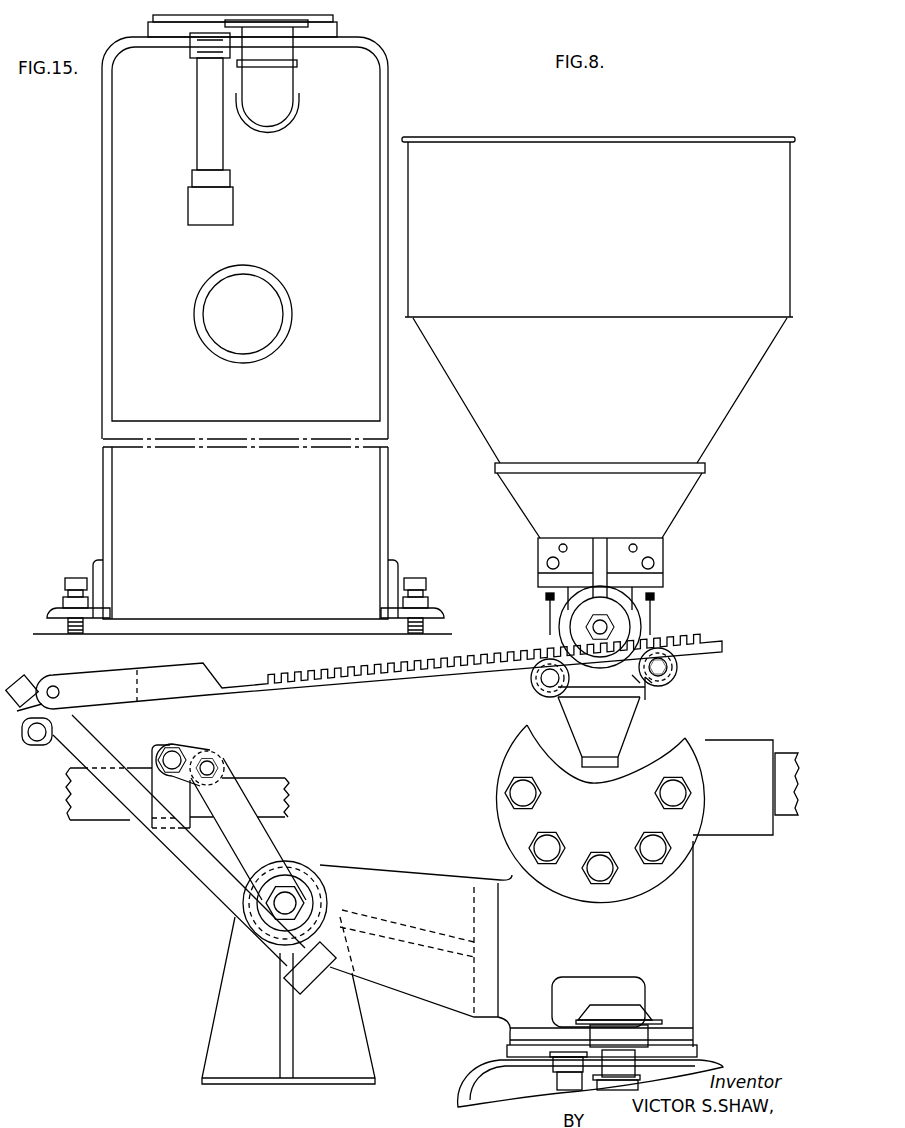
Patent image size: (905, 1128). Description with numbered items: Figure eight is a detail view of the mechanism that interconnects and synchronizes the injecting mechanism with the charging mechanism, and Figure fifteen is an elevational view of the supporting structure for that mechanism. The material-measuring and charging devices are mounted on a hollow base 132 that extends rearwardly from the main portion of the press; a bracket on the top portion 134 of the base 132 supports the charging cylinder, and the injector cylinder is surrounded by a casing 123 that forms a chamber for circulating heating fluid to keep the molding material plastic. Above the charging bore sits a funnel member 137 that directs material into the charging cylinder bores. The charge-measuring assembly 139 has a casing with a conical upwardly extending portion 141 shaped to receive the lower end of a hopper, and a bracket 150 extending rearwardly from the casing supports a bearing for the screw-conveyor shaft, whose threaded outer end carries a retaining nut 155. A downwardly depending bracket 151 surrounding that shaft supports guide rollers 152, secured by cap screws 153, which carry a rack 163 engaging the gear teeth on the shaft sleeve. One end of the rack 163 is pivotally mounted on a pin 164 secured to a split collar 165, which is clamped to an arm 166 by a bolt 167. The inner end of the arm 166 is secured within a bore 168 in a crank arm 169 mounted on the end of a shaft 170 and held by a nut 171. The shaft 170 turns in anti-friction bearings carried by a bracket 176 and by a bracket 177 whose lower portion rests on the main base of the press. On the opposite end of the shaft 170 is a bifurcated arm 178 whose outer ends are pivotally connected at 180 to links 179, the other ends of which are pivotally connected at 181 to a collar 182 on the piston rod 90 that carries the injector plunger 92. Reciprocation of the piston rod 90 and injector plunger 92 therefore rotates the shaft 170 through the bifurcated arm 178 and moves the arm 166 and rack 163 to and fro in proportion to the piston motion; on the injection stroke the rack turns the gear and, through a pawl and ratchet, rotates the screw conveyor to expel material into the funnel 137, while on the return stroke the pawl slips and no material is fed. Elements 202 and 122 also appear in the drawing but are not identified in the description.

In FIG. 15, the hollow base 132 is at (102, 182).
In FIG. 8, the hollow base 132 is at (459, 1095).
In FIG. 15, the top portion of the base 134 is at (147, 40).
In FIG. 8, the top portion of the base 134 is at (505, 1058).
In FIG. 15, the pipe / bell fitting 202 is at (288, 54).
In FIG. 8, the pipe / bell fitting 202 is at (647, 1013).
In FIG. 8, the charge-measuring assembly 139 is at (628, 478).
In FIG. 8, the conical upwardly extending portion 141 is at (527, 500).
In FIG. 8, the bracket 150 is at (664, 552).
In FIG. 8, the retaining nut 155 is at (590, 625).
In FIG. 8, the rack 163 is at (313, 672).
In FIG. 8, the pin 164 is at (56, 686).
In FIG. 8, the split collar 165 is at (42, 671).
In FIG. 8, the arm 166 is at (92, 748).
In FIG. 8, the bolt 167 is at (36, 744).
In FIG. 8, the bore 168 is at (306, 988).
In FIG. 8, the crank arm 169 is at (330, 930).
In FIG. 8, the shaft 170 is at (296, 886).
In FIG. 8, the nut 171 is at (302, 907).
In FIG. 8, the bracket 176 is at (426, 886).
In FIG. 8, the bracket 177 is at (225, 993).
In FIG. 8, the bifurcated arm 178 is at (276, 850).
In FIG. 8, the links 179 is at (200, 752).
In FIG. 8, the pivotal connection 180 is at (217, 762).
In FIG. 8, the pivotal connection 181 is at (172, 746).
In FIG. 8, the collar 182 is at (152, 765).
In FIG. 8, the piston rod 90 is at (82, 812).
In FIG. 8, the injector plunger 92 is at (270, 777).
In FIG. 8, the funnel member 137 is at (618, 735).
In FIG. 8, the downwardly depending bracket 151 is at (642, 702).
In FIG. 8, the guide rollers 152 is at (540, 690).
In FIG. 8, the cap screws 153 is at (668, 672).
In FIG. 8, the casing 123 is at (738, 745).
In FIG. 8, the shaft 122 is at (780, 752).